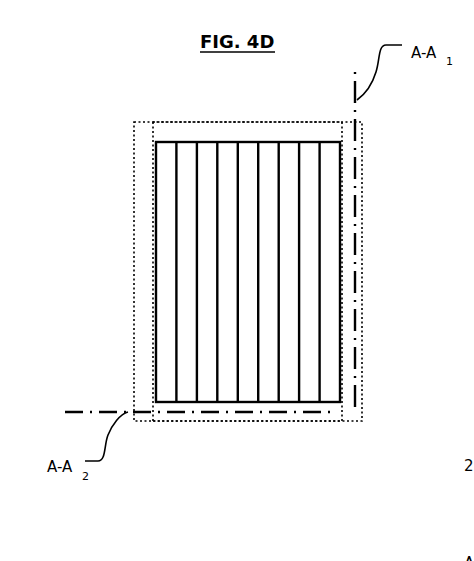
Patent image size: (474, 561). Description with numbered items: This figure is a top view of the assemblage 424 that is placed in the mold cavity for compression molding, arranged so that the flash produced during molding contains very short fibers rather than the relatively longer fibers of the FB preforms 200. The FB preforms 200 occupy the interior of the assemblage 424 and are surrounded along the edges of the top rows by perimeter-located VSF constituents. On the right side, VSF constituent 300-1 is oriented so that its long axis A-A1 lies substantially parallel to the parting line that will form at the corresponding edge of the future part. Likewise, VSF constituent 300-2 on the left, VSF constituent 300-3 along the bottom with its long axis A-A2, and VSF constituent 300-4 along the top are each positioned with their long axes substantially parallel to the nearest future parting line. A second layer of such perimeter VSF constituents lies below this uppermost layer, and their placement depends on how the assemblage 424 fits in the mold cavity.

The assemblage 424 is at (157, 98).
The VSF constituent 300-4 is at (211, 128).
The VSF constituent 300-2 is at (148, 257).
The VSF constituent 300-1 is at (358, 265).
The VSF constituent 300-3 is at (257, 418).
The FB preform 200 is at (187, 283).